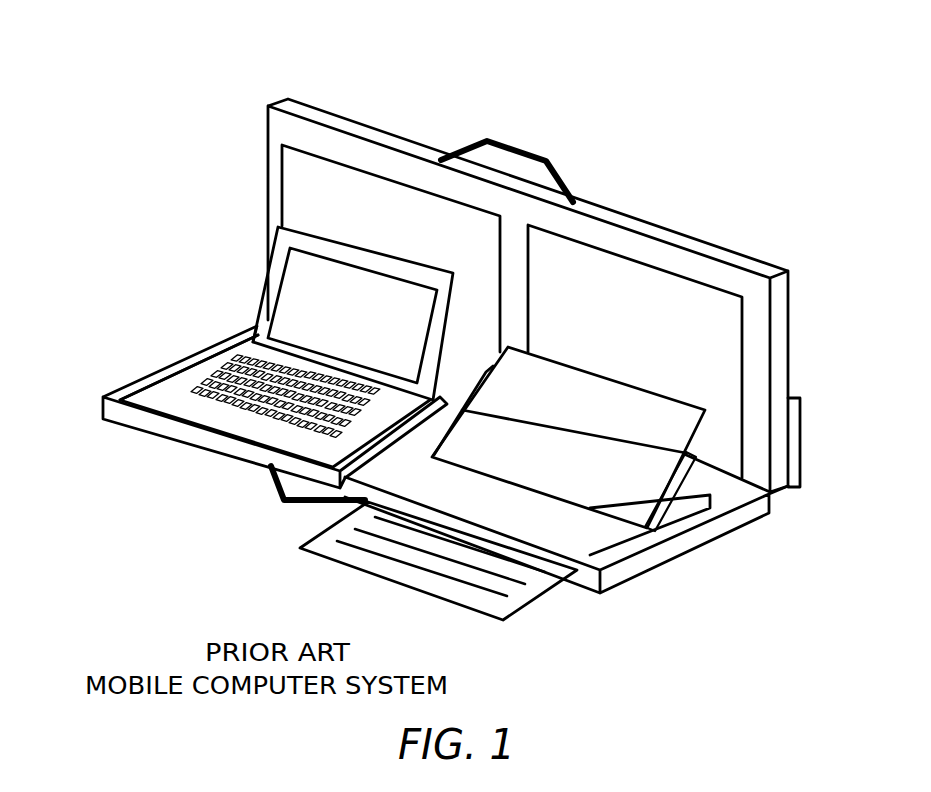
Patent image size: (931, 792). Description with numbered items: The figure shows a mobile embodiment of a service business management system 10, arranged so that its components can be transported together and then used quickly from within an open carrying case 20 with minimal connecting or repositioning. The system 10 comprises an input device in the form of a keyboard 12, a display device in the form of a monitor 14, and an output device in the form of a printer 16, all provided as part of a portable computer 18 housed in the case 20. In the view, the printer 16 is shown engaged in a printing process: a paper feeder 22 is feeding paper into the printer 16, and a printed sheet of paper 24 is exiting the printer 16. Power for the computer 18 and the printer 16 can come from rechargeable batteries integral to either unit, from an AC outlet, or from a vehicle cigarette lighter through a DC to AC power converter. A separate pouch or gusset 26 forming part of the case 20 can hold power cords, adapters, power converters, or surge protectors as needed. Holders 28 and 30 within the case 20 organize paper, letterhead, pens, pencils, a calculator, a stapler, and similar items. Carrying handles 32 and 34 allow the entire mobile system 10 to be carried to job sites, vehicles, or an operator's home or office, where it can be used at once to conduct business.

The service business management system 10 is at (182, 279).
The keyboard 12 is at (236, 360).
The monitor 14 is at (293, 297).
The printer 16 is at (610, 530).
The portable computer 18 is at (163, 393).
The carrying case 20 is at (414, 152).
The paper feeder 22 is at (688, 473).
The printed sheet of paper 24 is at (515, 595).
The pouch or gusset 26 is at (797, 437).
The holder 28 is at (693, 310).
The holder 30 is at (293, 183).
The carrying handle 32 is at (536, 152).
The carrying handle 34 is at (290, 512).